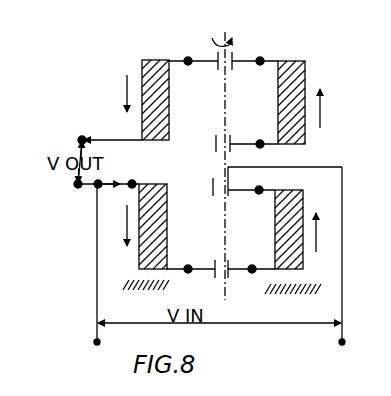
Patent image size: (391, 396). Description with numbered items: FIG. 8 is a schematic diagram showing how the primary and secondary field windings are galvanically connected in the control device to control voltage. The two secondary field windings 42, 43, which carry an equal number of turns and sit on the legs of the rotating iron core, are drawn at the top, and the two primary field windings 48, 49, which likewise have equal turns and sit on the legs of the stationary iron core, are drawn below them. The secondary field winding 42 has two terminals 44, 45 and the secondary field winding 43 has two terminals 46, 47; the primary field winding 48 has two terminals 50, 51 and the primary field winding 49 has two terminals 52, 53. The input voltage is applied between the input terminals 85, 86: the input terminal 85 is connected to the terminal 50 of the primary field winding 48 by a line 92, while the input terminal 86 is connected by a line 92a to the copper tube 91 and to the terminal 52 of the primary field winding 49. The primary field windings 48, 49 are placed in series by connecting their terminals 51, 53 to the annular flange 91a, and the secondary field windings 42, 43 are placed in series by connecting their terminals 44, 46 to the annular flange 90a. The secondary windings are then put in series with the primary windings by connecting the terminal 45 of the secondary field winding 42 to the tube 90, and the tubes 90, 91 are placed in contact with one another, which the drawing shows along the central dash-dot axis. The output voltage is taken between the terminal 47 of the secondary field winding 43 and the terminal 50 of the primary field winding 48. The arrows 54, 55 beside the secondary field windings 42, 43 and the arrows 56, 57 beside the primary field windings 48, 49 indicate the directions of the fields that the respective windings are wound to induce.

The secondary field winding 42 is at (293, 80).
The secondary field winding 43 is at (152, 70).
The terminal 44 is at (260, 59).
The terminal 45 is at (260, 143).
The terminal 46 is at (188, 59).
The terminal 47 is at (110, 127).
The primary field winding 48 is at (155, 205).
The primary field winding 49 is at (283, 233).
The terminal 50 is at (132, 183).
The terminal 51 is at (188, 268).
The terminal 52 is at (260, 189).
The terminal 53 is at (251, 271).
The arrow 54 is at (319, 115).
The arrow 55 is at (126, 92).
The arrow 56 is at (125, 232).
The arrow 57 is at (318, 230).
The input terminal 85 is at (97, 345).
The input terminal 86 is at (342, 345).
The tube 90 is at (215, 139).
The annular flange 90a is at (233, 67).
The tube 91 is at (213, 184).
The annular flange 91a is at (212, 278).
The line 92 is at (97, 262).
The line 92a is at (343, 279).